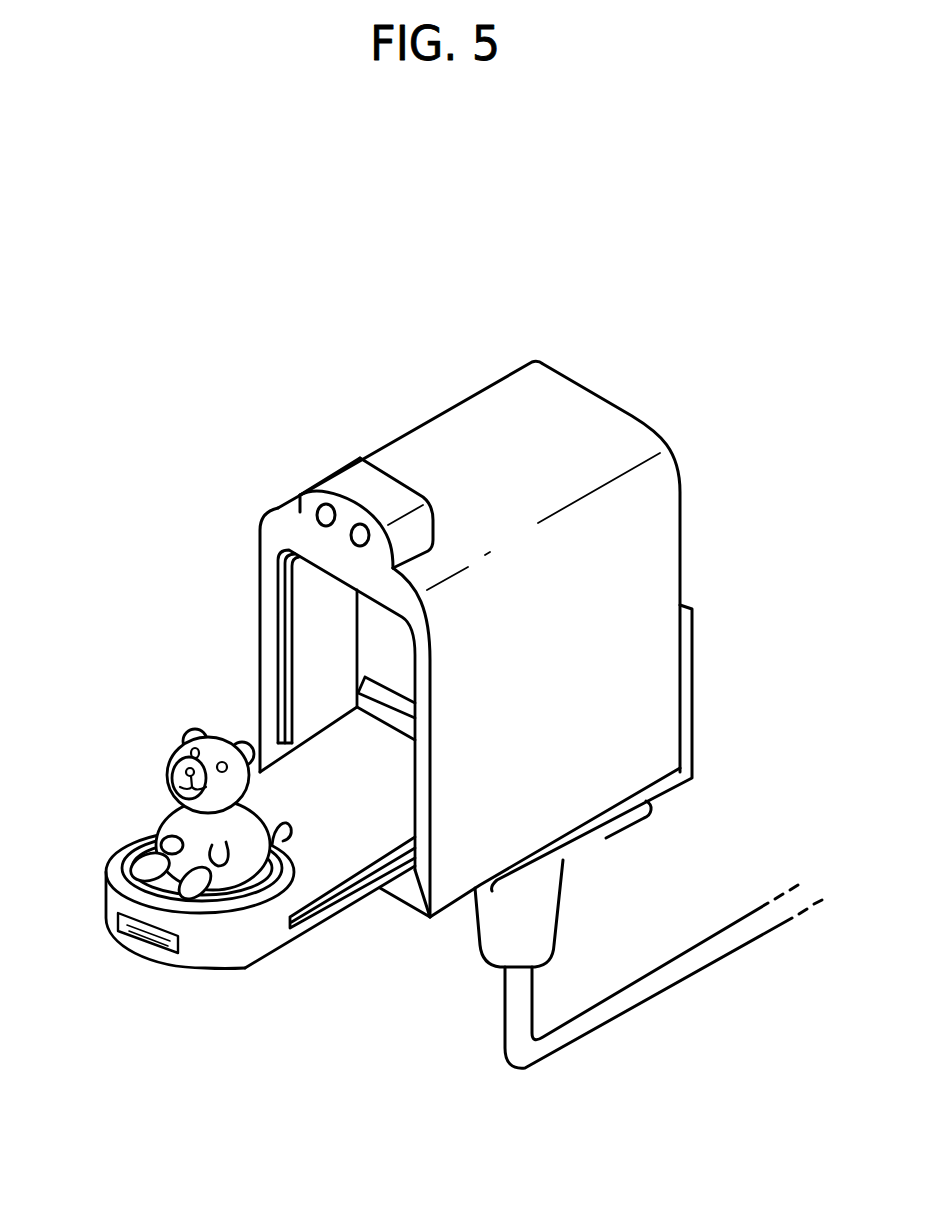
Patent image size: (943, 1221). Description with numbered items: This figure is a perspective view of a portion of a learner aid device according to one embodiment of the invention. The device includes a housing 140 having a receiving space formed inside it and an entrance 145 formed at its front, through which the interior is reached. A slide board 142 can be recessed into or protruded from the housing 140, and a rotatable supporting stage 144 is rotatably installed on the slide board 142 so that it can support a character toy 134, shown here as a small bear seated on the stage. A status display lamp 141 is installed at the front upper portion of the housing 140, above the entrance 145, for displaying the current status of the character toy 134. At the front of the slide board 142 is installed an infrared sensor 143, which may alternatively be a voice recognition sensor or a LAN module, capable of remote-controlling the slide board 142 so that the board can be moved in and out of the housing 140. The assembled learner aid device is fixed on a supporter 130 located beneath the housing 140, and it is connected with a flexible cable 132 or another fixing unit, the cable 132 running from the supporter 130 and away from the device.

The supporter 130 is at (543, 910).
The flexible cable 132 is at (702, 958).
The character toy 134 is at (172, 805).
The housing 140 is at (669, 525).
The status display lamp 141 is at (300, 497).
The slide board 142 is at (340, 845).
The infrared sensor 143 is at (140, 947).
The rotatable supporting stage 144 is at (127, 842).
The entrance 145 is at (317, 612).